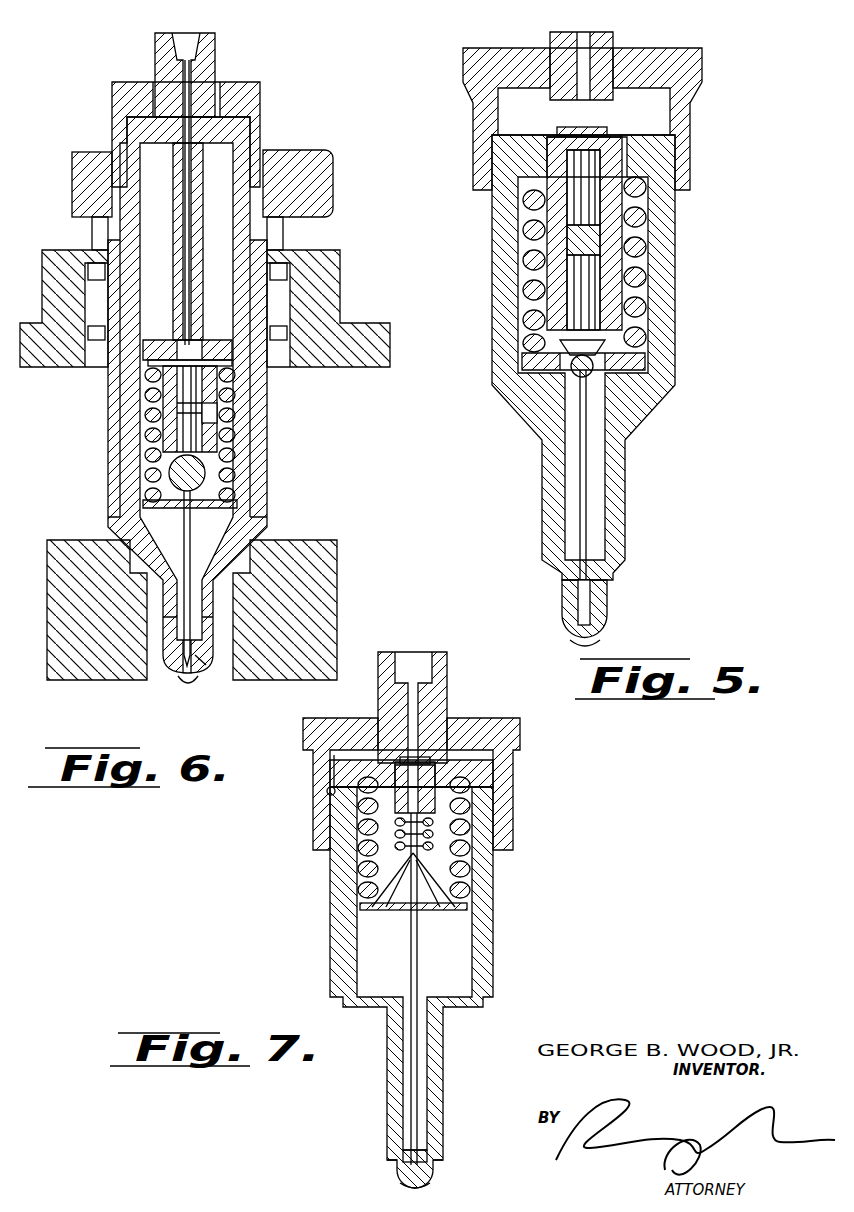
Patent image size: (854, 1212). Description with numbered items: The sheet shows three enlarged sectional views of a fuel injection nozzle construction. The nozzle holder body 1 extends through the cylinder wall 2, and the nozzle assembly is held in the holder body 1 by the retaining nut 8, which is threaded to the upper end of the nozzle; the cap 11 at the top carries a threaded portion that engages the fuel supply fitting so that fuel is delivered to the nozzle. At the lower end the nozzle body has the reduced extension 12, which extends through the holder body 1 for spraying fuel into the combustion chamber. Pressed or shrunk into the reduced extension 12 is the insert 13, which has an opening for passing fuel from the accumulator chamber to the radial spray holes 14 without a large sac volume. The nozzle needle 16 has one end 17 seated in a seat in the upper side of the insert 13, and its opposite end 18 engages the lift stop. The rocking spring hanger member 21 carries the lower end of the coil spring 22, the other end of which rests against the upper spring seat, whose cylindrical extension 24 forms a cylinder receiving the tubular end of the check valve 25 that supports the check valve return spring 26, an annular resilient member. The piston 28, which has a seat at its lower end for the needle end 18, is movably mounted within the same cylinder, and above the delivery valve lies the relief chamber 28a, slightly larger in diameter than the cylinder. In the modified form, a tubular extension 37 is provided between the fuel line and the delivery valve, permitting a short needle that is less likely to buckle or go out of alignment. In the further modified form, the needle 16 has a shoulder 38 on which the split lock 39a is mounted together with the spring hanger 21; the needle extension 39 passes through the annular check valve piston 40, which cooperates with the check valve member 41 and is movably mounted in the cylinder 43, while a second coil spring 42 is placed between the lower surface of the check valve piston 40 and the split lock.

In FIG. 6, the nozzle holder body 1 is at (267, 391).
In FIG. 6, the cylinder wall 2 is at (363, 353).
In FIG. 6, the retaining nut 8 is at (247, 102).
In FIG. 5, the retaining nut 8 is at (680, 70).
In FIG. 7, the retaining nut 8 is at (483, 735).
In FIG. 6, the cap 11 is at (200, 68).
In FIG. 5, the cap 11 is at (597, 50).
In FIG. 7, the cap 11 is at (435, 690).
In FIG. 6, the reduced extension 12 is at (170, 677).
In FIG. 5, the reduced extension 12 is at (565, 600).
In FIG. 7, the reduced extension 12 is at (397, 1172).
In FIG. 6, the insert 13 is at (221, 690).
In FIG. 5, the insert 13 is at (600, 590).
In FIG. 6, the radial spray holes 14 is at (197, 690).
In FIG. 5, the radial spray holes 14 is at (600, 632).
In FIG. 7, the radial spray holes 14 is at (435, 1181).
In FIG. 6, the nozzle needle 16 is at (183, 532).
In FIG. 5, the nozzle needle 16 is at (590, 473).
In FIG. 7, the nozzle needle 16 is at (411, 959).
In FIG. 7, the needle end 17 is at (432, 1156).
In FIG. 6, the needle opposite end 18 is at (206, 473).
In FIG. 5, the needle opposite end 18 is at (598, 375).
In FIG. 6, the rocking spring hanger member 21 is at (238, 505).
In FIG. 5, the rocking spring hanger member 21 is at (648, 365).
In FIG. 7, the rocking spring hanger member 21 is at (470, 907).
In FIG. 6, the coil spring 22 is at (235, 430).
In FIG. 5, the coil spring 22 is at (646, 217).
In FIG. 6, the cylindrical extension 24 is at (217, 420).
In FIG. 6, the check valve 25 is at (160, 398).
In FIG. 6, the check valve return spring 26 is at (147, 373).
In FIG. 5, the check valve return spring 26 is at (593, 203).
In FIG. 6, the piston 28 is at (163, 441).
In FIG. 5, the piston 28 is at (603, 293).
In FIG. 5, the relief chamber 28a is at (567, 131).
In FIG. 6, the tubular extension 37 is at (197, 177).
In FIG. 7, the shoulder 38 is at (389, 896).
In FIG. 7, the needle extension 39 is at (420, 822).
In FIG. 7, the split lock 39a is at (467, 870).
In FIG. 7, the annular check valve piston 40 is at (440, 795).
In FIG. 7, the check valve member 41 is at (433, 775).
In FIG. 7, the second coil spring 42 is at (445, 845).
In FIG. 7, the cylinder 43 is at (325, 775).